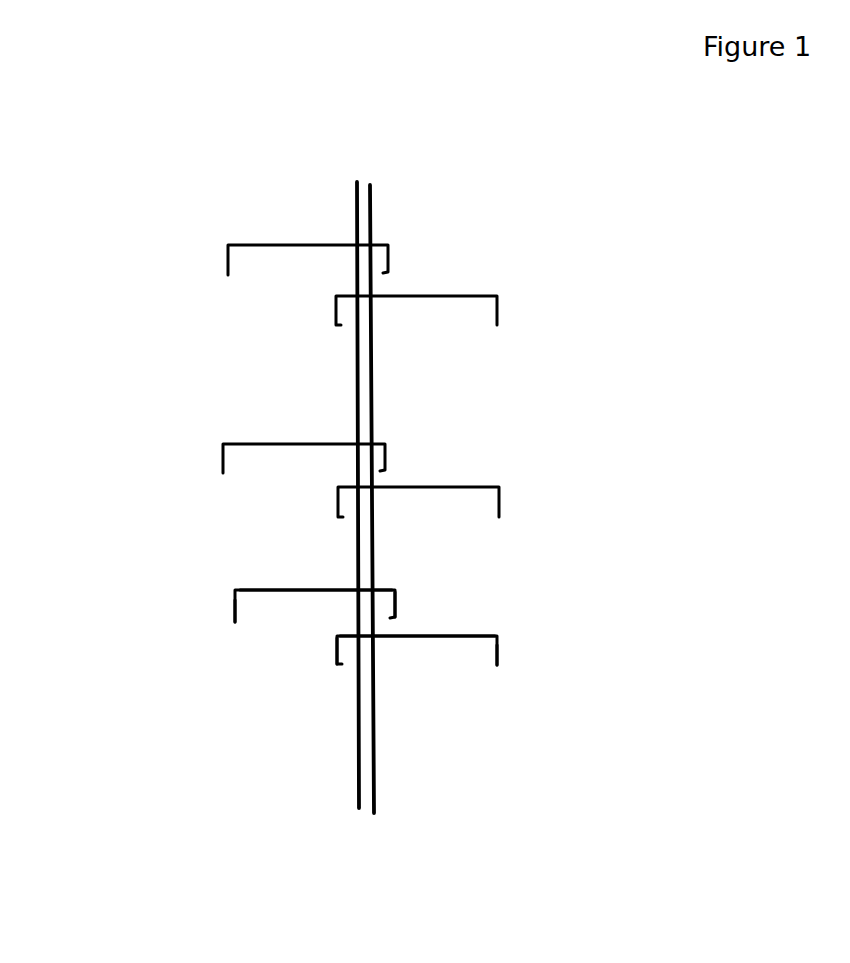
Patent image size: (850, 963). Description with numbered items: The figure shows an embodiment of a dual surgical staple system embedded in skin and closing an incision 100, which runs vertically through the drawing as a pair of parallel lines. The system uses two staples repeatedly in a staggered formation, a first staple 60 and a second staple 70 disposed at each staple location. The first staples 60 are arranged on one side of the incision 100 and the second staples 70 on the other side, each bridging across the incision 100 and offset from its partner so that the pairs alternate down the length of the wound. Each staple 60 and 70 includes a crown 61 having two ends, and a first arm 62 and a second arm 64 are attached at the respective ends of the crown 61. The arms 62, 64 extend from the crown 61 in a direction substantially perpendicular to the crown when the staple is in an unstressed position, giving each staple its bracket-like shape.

The incision 100 is at (469, 557).
The first staple 60 is at (252, 226).
The second staple 70 is at (447, 282).
The crown 61 is at (288, 593).
The first arm 62 is at (397, 602).
The second arm 64 is at (233, 608).